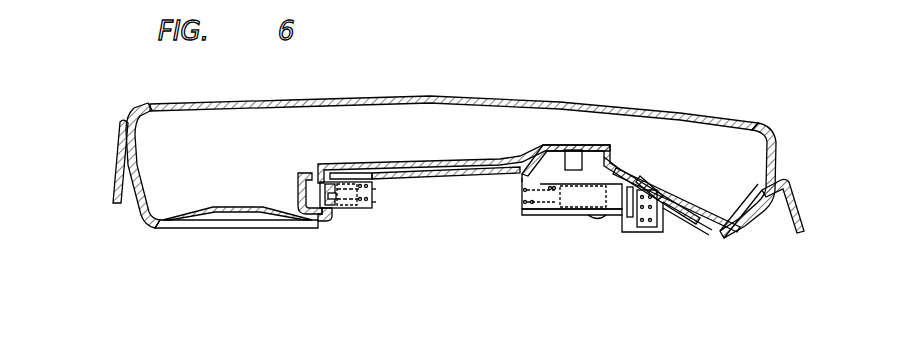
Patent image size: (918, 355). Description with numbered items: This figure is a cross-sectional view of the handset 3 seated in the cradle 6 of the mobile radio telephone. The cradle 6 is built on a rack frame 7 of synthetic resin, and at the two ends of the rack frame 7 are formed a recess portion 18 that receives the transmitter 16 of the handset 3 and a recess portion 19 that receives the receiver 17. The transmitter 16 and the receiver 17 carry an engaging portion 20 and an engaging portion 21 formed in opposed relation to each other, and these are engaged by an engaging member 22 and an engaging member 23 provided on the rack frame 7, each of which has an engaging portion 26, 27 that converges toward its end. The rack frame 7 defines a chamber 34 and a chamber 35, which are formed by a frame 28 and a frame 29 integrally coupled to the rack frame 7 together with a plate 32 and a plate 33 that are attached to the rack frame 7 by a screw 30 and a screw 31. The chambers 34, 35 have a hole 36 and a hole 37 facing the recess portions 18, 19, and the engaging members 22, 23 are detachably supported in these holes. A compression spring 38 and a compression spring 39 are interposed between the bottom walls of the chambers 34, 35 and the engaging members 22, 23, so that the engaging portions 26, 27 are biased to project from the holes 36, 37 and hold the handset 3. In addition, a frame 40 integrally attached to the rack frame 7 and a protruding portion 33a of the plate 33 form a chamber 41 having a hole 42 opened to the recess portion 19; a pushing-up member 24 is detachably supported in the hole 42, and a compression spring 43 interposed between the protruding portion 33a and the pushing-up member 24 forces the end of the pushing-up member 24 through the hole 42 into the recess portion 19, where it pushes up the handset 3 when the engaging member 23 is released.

The handset 3 is at (426, 97).
The cradle 6 is at (117, 152).
The rack frame 7 is at (797, 190).
The transmitter 16 is at (205, 230).
The receiver 17 is at (716, 240).
The recess portion 18 is at (146, 185).
The recess portion 19 is at (760, 178).
The engaging portion 20 is at (320, 166).
The engaging portion 21 is at (612, 144).
The engaging member 22 is at (360, 208).
The engaging member 23 is at (570, 210).
The pushing-up member 24 is at (668, 186).
The engaging portion 26 is at (298, 187).
The engaging portion 27 is at (609, 160).
The frame 28 is at (373, 187).
The frame 29 is at (521, 202).
The screw 30 is at (320, 222).
The screw 31 is at (597, 223).
The plate 32 is at (373, 196).
The plate 33 is at (538, 216).
The protruding portion 33a is at (628, 230).
The chamber 34 is at (346, 182).
The chamber 35 is at (521, 180).
The hole 36 is at (328, 164).
The hole 37 is at (571, 149).
The compression spring 38 is at (340, 208).
The compression spring 39 is at (525, 210).
The frame 40 is at (668, 216).
The chamber 41 is at (655, 232).
The hole 42 is at (648, 180).
The compression spring 43 is at (643, 232).